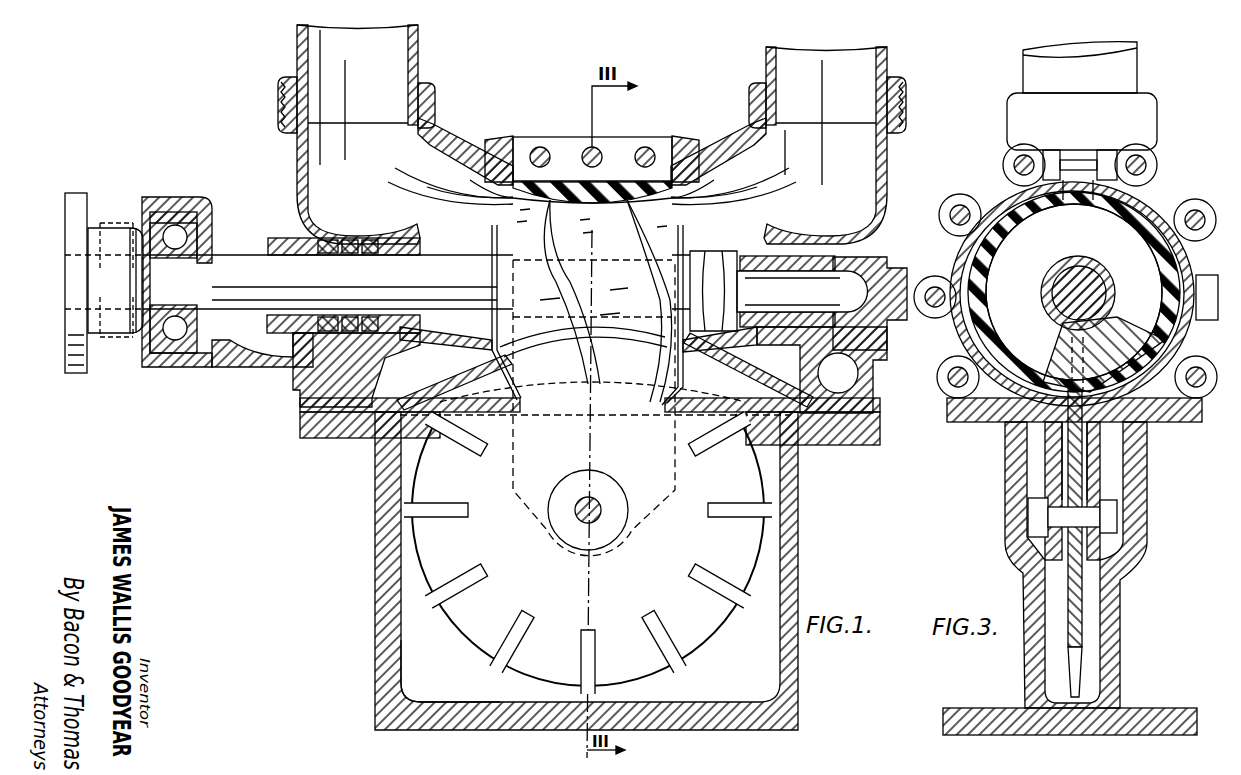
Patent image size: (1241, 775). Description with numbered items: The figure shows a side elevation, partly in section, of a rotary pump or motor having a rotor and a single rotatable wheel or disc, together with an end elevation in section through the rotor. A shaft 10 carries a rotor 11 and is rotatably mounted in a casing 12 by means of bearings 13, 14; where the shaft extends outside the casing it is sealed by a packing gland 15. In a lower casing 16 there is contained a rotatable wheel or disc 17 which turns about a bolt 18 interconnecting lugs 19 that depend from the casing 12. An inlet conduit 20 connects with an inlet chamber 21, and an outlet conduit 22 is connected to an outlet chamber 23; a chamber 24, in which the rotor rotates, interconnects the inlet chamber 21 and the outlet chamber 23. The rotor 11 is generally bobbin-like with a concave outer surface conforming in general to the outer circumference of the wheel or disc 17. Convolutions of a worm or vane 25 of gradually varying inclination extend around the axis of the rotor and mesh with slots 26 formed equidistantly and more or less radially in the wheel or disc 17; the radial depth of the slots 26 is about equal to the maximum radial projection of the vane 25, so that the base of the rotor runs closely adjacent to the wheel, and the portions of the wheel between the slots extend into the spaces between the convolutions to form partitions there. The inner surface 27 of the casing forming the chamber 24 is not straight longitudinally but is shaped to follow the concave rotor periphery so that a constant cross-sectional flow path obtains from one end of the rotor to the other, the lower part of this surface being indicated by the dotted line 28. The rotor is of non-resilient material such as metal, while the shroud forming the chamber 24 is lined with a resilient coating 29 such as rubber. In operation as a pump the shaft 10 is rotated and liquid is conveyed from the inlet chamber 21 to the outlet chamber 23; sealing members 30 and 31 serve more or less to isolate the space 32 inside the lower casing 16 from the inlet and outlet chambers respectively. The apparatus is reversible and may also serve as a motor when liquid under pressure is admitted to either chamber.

In FIG. 1, the shaft 10 is at (222, 255).
In FIG. 3, the shaft 10 is at (1058, 298).
In FIG. 1, the rotor 11 is at (520, 282).
In FIG. 1, the casing 12 is at (308, 403).
In FIG. 1, the bearing 13 is at (178, 340).
In FIG. 1, the bearing 14 is at (846, 348).
In FIG. 1, the packing gland 15 is at (310, 365).
In FIG. 1, the lower casing 16 is at (798, 556).
In FIG. 3, the lower casing 16 is at (1137, 497).
In FIG. 1, the rotatable wheel or disc 17 is at (556, 553).
In FIG. 3, the rotatable wheel or disc 17 is at (1073, 580).
In FIG. 1, the bolt 18 is at (577, 509).
In FIG. 3, the bolt 18 is at (1045, 532).
In FIG. 1, the lugs 19 is at (651, 500).
In FIG. 3, the lugs 19 is at (1087, 460).
In FIG. 1, the inlet conduit 20 is at (297, 63).
In FIG. 1, the inlet chamber 21 is at (400, 168).
In FIG. 1, the outlet conduit 22 is at (887, 75).
In FIG. 1, the outlet chamber 23 is at (830, 186).
In FIG. 1, the chamber 24 is at (588, 222).
In FIG. 1, the worm or vane 25 is at (595, 357).
In FIG. 3, the worm or vane 25 is at (1125, 337).
In FIG. 1, the slots 26 is at (408, 507).
In FIG. 3, the slots 26 is at (1072, 668).
In FIG. 1, the inner surface 27 is at (523, 180).
In FIG. 1, the dotted line 28 is at (560, 387).
In FIG. 1, the resilient coating 29 is at (612, 186).
In FIG. 3, the resilient coating 29 is at (1125, 200).
In FIG. 1, the sealing member 30 is at (372, 446).
In FIG. 1, the sealing member 31 is at (818, 446).
In FIG. 1, the space 32 is at (412, 660).